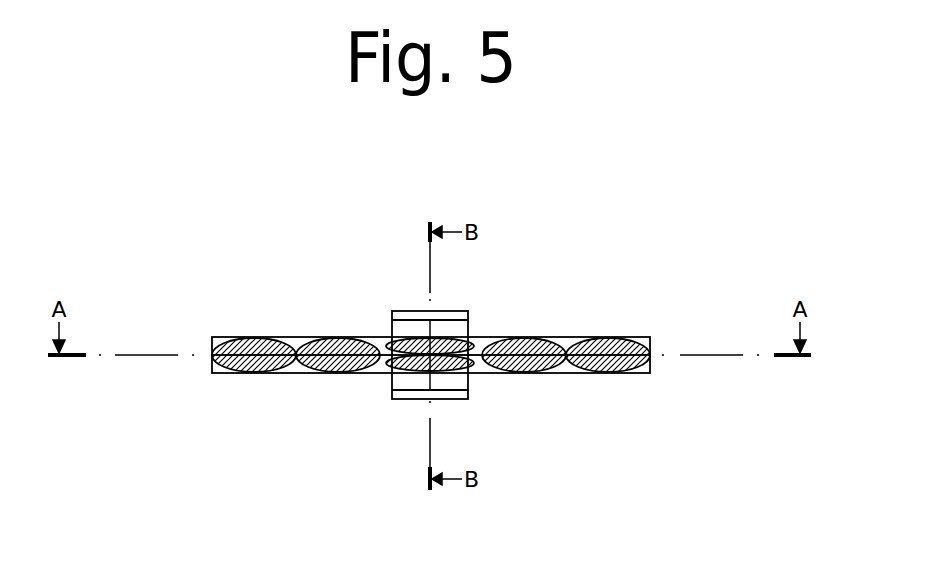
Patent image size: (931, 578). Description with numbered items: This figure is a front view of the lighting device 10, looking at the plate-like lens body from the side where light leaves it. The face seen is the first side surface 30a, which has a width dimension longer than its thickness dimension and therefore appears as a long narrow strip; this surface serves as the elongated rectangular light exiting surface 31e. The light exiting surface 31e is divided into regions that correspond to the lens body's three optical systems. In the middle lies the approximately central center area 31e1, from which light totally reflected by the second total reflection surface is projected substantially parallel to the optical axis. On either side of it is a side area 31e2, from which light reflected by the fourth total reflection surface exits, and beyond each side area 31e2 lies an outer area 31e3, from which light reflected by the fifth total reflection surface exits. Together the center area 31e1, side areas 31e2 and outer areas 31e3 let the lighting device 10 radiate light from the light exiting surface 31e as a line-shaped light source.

The lighting device 10 is at (392, 163).
The first side surface 30a is at (376, 374).
The light exiting surface 31e is at (564, 374).
The center area 31e1 is at (457, 339).
The side area 31e2 is at (336, 337).
The outer area 31e3 is at (252, 337).